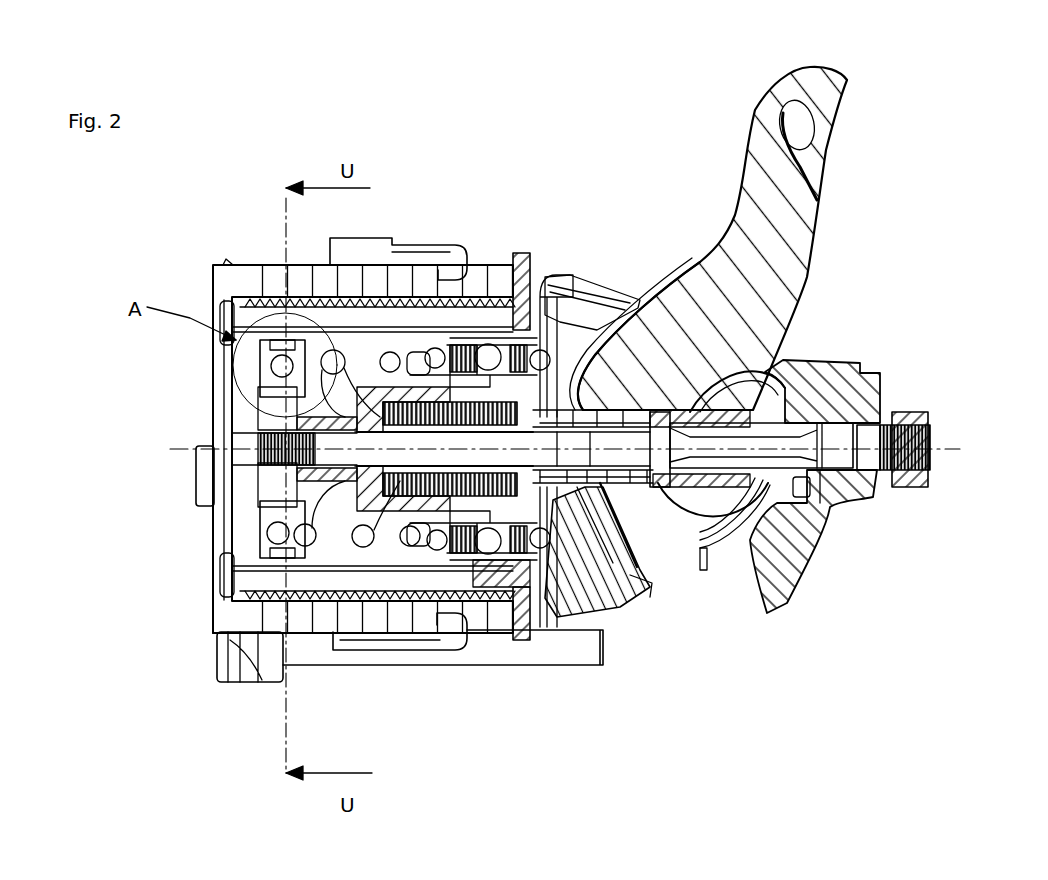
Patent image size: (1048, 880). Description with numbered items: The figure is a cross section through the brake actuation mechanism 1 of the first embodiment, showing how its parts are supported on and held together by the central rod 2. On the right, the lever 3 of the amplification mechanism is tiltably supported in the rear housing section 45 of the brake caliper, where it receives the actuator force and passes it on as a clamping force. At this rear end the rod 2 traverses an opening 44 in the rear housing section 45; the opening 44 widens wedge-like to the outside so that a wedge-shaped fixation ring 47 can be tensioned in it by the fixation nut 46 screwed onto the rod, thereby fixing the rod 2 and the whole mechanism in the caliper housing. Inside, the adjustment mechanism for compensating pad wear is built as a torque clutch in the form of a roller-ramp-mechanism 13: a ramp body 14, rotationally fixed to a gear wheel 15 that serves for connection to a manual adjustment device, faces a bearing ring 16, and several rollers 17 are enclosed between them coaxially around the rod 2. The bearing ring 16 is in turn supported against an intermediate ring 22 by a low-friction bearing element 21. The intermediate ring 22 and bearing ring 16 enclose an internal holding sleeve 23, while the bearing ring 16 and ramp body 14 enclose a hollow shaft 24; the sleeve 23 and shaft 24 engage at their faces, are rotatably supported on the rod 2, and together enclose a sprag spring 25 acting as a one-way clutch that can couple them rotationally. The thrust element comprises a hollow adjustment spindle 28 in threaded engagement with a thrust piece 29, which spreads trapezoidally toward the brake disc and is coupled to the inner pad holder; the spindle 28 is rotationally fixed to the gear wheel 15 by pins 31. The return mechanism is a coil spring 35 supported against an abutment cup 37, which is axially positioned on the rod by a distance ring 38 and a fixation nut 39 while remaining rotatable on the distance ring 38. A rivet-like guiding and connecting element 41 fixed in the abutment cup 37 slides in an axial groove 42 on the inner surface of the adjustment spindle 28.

The brake actuation mechanism 1 is at (830, 647).
The rod 2 is at (840, 440).
The lever 3 is at (800, 205).
The roller-ramp-mechanism 13 is at (470, 560).
The ramp body 14 is at (522, 605).
The gear wheel 15 is at (527, 300).
The bearing ring 16 is at (462, 545).
The rollers 17 is at (487, 350).
The low-friction bearing element 21 is at (428, 548).
The intermediate ring 22 is at (445, 545).
The internal holding sleeve 23 is at (345, 495).
The hollow shaft 24 is at (603, 635).
The sprag spring 25 is at (590, 330).
The hollow adjustment spindle 28 is at (248, 576).
The thrust piece 29 is at (228, 616).
The pins 31 is at (513, 620).
The coil spring 35 is at (373, 387).
The abutment cup 37 is at (300, 537).
The distance ring 38 is at (290, 428).
The fixation nut 39 is at (262, 490).
The guiding and connecting element 41 is at (262, 350).
The groove 42 is at (415, 318).
The opening 44 is at (857, 503).
The rear housing section 45 is at (838, 390).
The fixation nut 46 is at (930, 430).
The fixation ring 47 is at (888, 415).